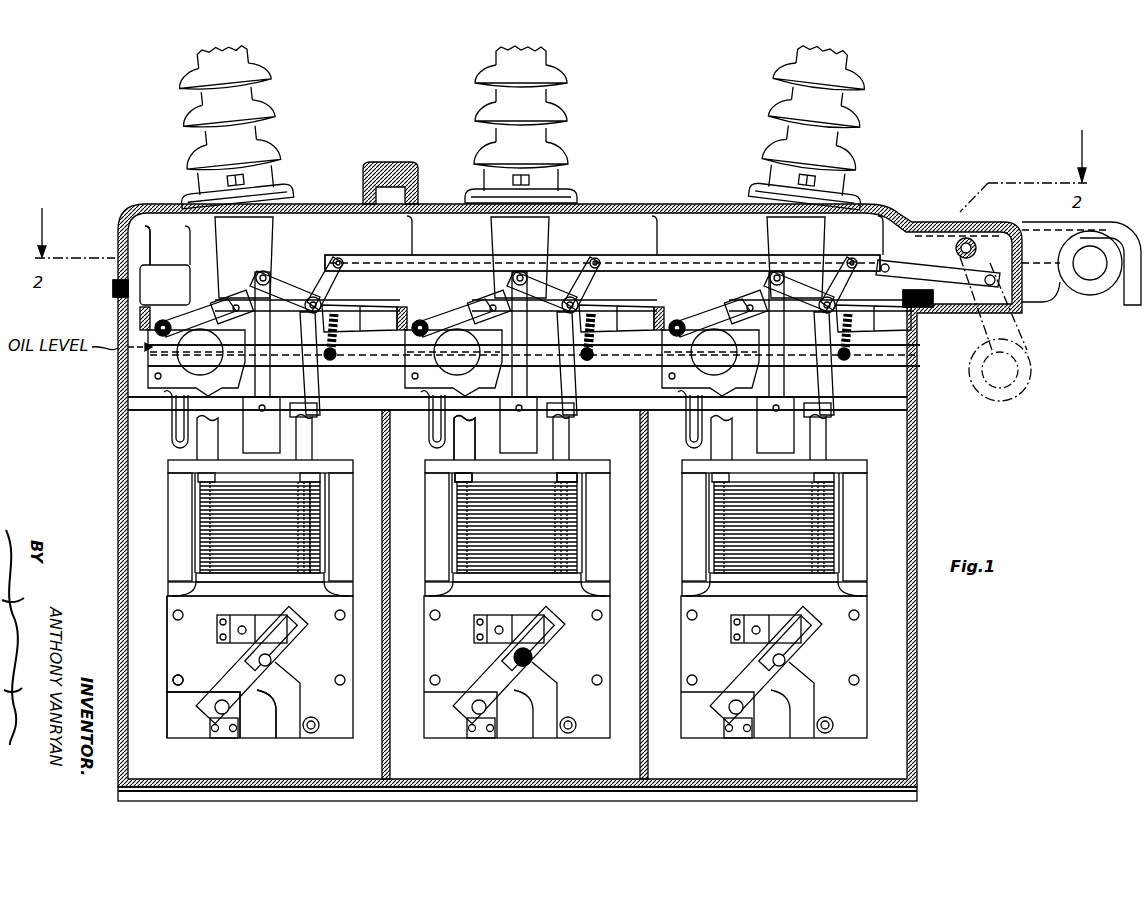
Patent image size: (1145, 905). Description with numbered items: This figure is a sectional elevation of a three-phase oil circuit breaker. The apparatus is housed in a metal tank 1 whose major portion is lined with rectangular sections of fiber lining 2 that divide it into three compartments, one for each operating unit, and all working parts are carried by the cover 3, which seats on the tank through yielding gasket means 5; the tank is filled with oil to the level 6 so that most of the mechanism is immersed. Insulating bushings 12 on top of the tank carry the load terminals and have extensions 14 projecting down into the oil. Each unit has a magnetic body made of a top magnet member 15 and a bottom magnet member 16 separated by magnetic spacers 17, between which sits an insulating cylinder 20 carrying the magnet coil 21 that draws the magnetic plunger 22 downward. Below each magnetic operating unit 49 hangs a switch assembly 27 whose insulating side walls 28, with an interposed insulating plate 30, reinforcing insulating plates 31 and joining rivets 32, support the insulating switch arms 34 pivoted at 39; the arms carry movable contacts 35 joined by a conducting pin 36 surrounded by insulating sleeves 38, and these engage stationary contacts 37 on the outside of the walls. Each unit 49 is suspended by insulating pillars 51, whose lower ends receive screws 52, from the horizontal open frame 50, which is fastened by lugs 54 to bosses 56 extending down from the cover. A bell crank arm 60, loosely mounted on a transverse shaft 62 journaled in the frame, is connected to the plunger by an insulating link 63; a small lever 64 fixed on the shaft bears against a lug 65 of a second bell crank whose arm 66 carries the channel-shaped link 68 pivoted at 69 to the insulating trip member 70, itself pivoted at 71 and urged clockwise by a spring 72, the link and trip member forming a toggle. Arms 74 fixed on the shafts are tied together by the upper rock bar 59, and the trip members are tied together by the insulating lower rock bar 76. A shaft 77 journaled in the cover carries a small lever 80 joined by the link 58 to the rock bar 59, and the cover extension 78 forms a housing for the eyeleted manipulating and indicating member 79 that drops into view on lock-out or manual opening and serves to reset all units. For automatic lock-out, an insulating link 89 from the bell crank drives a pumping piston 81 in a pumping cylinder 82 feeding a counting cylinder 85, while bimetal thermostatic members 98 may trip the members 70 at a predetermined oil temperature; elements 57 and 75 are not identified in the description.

The metal tank 1 is at (920, 470).
The fiber lining section 2 is at (912, 615).
The cover 3 is at (670, 204).
The yielding gasket means 5 is at (122, 296).
The oil level 6 is at (132, 348).
The insulating bushing 12 is at (280, 108).
The bushing extension 14 is at (272, 248).
The top magnet member 15 is at (330, 466).
The bottom magnet member 16 is at (340, 588).
The magnetic spacers 17 is at (350, 505).
The insulating cylinder 20 is at (330, 478).
The magnet coil 21 is at (330, 522).
The magnetic plunger 22 is at (281, 418).
The switch assembly 27 is at (160, 612).
The insulating side walls 28 is at (176, 725).
The insulating plate 30 is at (196, 577).
The reinforcing insulating plates 31 is at (172, 658).
The rivets 32 is at (173, 682).
The insulating arms 34 is at (278, 680).
The movable contacts 35 is at (310, 645).
The conducting pin 36 is at (262, 660).
The stationary contacts 37 is at (282, 616).
The insulating sleeves 38 is at (535, 658).
The arm pivot 39 is at (222, 700).
The magnetic operating unit 49 is at (175, 540).
The horizontal open frame 50 is at (912, 350).
The insulating pillars 51 is at (215, 440).
The screws 52 is at (472, 478).
The lugs 54 is at (148, 266).
The bosses 56 is at (190, 252).
The pivot pin 57 is at (885, 263).
The link 58 is at (925, 268).
The upper rock bar 59 is at (712, 271).
The bell crank lever arm 60 is at (270, 278).
The transverse shaft 62 is at (270, 320).
The insulating link 63 is at (240, 355).
The small lever 64 is at (355, 318).
The lug 65 is at (342, 340).
The bell crank arm 66 is at (360, 306).
The channel-shaped link 68 is at (318, 300).
The pivot 69 is at (238, 304).
The trip member 70 is at (150, 383).
The pivot pin 71 is at (165, 322).
The spring 72 is at (198, 315).
The upwardly projecting lever 74 is at (340, 262).
The spring 75 is at (583, 348).
The lower rock bar 76 is at (360, 408).
The shaft 77 is at (968, 238).
The cover extension 78 is at (1125, 305).
The eyeleted manipulating and indicating member 79 is at (1085, 298).
The small lever 80 is at (1000, 235).
The pumping piston 81 is at (320, 410).
The pumping cylinder 82 is at (303, 420).
The counting cylinder 85 is at (218, 425).
The insulating link 89 is at (318, 398).
The bimetal thermostatic members 98 is at (170, 432).